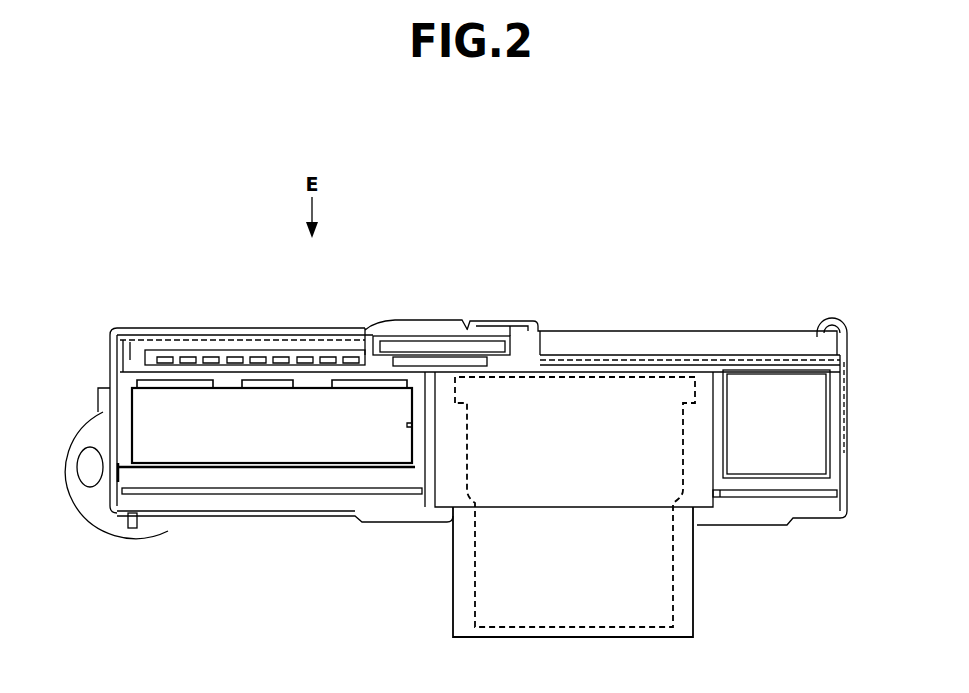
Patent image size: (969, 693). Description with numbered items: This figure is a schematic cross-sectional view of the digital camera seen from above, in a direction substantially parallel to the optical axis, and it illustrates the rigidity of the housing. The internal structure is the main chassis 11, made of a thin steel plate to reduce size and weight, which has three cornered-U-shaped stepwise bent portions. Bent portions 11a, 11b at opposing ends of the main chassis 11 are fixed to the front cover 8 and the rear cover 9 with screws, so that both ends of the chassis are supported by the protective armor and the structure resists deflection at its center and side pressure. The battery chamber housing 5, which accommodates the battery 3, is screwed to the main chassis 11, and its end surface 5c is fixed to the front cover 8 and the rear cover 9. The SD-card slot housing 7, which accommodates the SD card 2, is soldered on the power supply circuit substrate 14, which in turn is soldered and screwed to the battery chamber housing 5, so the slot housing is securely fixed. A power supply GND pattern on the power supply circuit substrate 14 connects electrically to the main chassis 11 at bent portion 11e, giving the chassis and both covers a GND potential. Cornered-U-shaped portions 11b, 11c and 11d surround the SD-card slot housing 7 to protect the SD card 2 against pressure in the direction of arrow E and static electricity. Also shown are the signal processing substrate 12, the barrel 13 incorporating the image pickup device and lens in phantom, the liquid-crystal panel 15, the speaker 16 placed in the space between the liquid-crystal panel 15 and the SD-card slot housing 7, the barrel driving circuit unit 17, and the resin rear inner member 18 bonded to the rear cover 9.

The SD memory card 2 is at (296, 345).
The battery 3 is at (238, 447).
The battery chamber housing 5 is at (412, 452).
The end surface 5c is at (81, 432).
The SD-card slot housing 7 is at (362, 340).
The front cover 8 is at (332, 518).
The rear cover 9 is at (520, 318).
The main chassis 11 is at (611, 354).
The bent portion 11a is at (848, 408).
The bent portion 11b is at (110, 365).
The cornered-U-shaped portion 11c is at (233, 340).
The cornered-U-shaped portion 11d is at (381, 340).
The bent portion 11e is at (433, 352).
The signal processing substrate 12 is at (813, 497).
The barrel 13 is at (672, 614).
The power supply circuit substrate 14 is at (123, 333).
The liquid-crystal panel 15 is at (730, 338).
The speaker 16 is at (472, 340).
The barrel driving circuit unit 17 is at (812, 465).
The rear inner member 18 is at (182, 338).